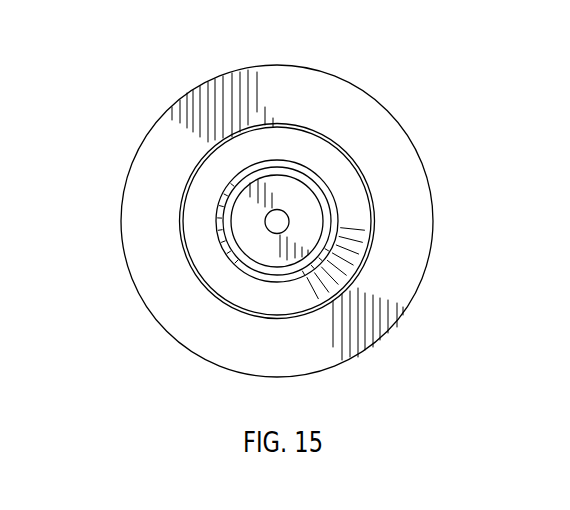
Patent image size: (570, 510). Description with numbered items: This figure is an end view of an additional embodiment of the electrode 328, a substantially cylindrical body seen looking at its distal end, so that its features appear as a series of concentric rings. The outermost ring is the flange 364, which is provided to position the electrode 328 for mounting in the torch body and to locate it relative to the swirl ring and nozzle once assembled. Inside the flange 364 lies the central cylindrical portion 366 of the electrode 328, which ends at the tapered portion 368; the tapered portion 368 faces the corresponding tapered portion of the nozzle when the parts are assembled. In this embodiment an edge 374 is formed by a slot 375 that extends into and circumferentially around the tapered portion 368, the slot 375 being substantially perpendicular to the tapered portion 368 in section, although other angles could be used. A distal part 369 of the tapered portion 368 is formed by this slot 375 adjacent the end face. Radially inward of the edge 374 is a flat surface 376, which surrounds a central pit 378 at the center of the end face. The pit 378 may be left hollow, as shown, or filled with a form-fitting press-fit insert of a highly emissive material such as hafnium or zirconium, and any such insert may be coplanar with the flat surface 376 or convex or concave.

The electrode 328 is at (365, 38).
The flange 364 is at (380, 103).
The central cylindrical portion 366 is at (348, 155).
The tapered portion 368 is at (368, 195).
The distal part 369 is at (331, 220).
The edge 374 is at (342, 231).
The slot 375 is at (334, 258).
The flat surface 376 is at (265, 256).
The central pit 378 is at (266, 222).